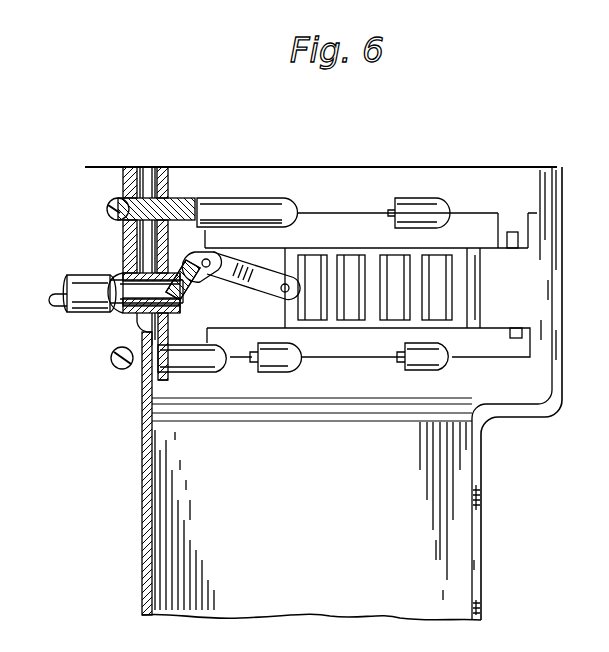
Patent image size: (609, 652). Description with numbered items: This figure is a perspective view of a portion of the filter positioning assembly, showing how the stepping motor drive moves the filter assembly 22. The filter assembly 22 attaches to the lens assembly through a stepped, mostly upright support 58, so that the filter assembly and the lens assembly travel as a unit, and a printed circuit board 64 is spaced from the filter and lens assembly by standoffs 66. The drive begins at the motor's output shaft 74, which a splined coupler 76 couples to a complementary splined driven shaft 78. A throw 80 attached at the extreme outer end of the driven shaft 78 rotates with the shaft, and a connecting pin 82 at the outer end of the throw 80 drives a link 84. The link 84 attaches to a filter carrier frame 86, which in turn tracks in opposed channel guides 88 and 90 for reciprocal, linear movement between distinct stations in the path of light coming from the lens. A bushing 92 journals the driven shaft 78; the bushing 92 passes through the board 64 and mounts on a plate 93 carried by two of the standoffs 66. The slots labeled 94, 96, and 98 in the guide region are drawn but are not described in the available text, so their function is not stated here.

The filter assembly 22 is at (525, 378).
The support 58 is at (462, 548).
The printed circuit board 64 is at (153, 515).
The standoffs 66 is at (222, 211).
The output shaft 74 is at (62, 294).
The splined coupler 76 is at (95, 310).
The driven shaft 78 is at (128, 285).
The throw 80 is at (190, 300).
The connecting pin 82 is at (203, 262).
The link 84 is at (256, 296).
The filter carrier frame 86 is at (480, 292).
The channel guide 88 is at (513, 222).
The channel guide 90 is at (535, 350).
The bushing 92 is at (313, 263).
The plate 93 is at (147, 178).
The slot 94 is at (345, 265).
The slot 96 is at (398, 268).
The slot 98 is at (437, 265).